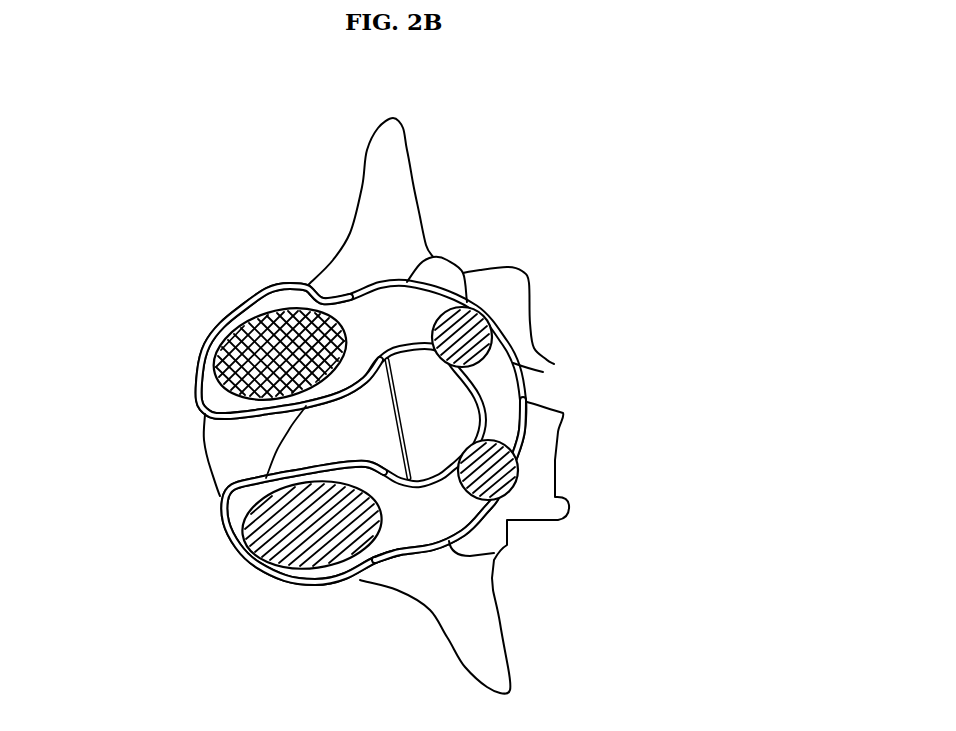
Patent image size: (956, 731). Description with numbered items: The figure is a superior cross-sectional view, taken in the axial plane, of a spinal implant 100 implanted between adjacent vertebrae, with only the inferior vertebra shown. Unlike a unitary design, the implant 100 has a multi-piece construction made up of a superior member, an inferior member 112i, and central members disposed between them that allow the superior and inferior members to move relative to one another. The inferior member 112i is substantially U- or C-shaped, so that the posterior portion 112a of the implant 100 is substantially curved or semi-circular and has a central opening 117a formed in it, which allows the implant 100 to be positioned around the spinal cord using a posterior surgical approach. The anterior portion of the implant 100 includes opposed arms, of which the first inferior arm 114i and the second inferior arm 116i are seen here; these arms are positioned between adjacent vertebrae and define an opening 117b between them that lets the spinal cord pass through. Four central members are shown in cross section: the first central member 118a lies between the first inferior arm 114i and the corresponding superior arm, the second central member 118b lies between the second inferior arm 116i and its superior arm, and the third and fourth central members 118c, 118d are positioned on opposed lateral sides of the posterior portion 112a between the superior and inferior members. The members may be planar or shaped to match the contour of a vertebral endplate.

The spinal implant 100 is at (231, 140).
The posterior portion 112a is at (504, 402).
The inferior member 112i is at (443, 519).
The first inferior arm 114i is at (197, 382).
The second inferior arm 116i is at (233, 541).
The central opening 117a is at (412, 393).
The opening 117b is at (240, 452).
The first central member 118a is at (243, 333).
The second central member 118b is at (278, 560).
The third central member 118c is at (484, 323).
The fourth central member 118d is at (522, 473).